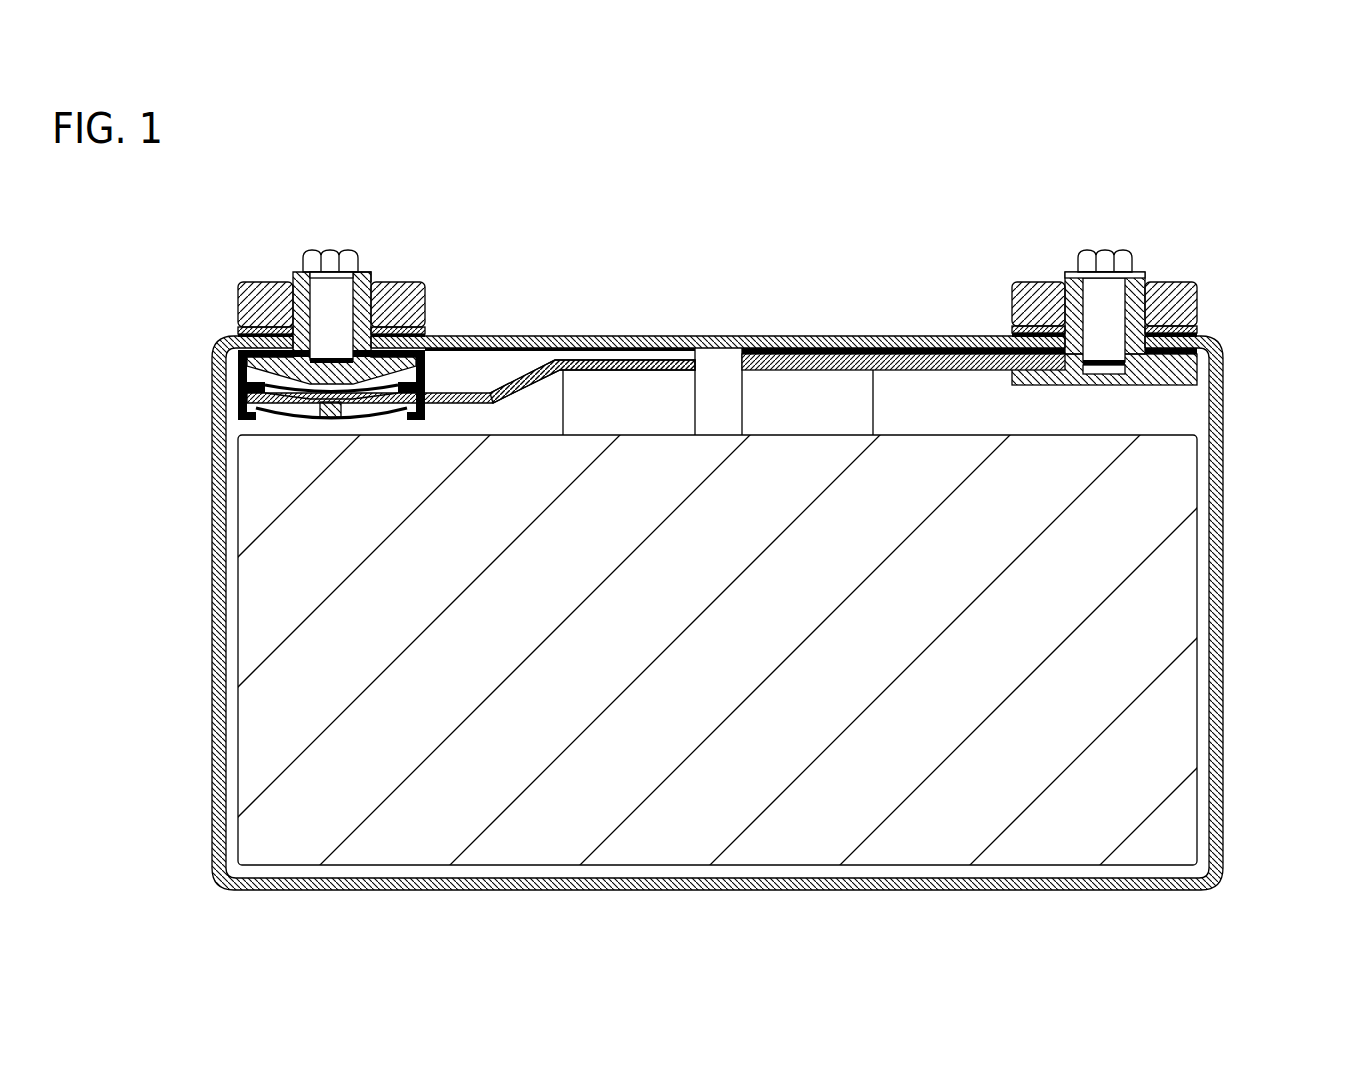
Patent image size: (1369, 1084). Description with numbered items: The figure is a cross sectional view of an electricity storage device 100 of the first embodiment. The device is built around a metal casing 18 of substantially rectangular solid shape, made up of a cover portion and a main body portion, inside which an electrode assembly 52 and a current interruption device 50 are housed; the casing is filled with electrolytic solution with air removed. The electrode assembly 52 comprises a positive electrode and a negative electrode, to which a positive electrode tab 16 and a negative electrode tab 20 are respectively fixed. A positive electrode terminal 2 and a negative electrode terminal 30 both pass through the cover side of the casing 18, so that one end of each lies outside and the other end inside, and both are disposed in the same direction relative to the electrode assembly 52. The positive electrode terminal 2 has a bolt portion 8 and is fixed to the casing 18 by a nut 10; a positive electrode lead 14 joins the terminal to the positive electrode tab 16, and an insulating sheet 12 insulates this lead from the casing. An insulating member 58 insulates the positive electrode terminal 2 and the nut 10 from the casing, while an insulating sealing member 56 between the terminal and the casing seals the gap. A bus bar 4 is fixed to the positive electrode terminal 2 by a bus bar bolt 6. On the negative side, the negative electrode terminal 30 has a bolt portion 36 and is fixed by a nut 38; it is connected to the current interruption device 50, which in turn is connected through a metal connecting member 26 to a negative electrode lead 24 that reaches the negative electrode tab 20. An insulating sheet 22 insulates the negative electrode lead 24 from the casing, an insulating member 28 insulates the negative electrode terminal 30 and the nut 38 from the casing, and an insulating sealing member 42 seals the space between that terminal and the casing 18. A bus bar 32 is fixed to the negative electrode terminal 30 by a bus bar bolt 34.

The electricity storage device 100 is at (1247, 217).
The positive electrode terminal 2 is at (1150, 282).
The bus bar 4 is at (1145, 280).
The bus bar bolt 6 is at (1105, 260).
The bolt portion 8 is at (1068, 280).
The nut 10 is at (1028, 283).
The insulating sheet 12 is at (900, 350).
The positive electrode lead 14 is at (855, 363).
The positive electrode tab 16 is at (787, 385).
The casing 18 is at (728, 335).
The negative electrode tab 20 is at (640, 390).
The insulating sheet 22 is at (600, 352).
The negative electrode lead 24 is at (533, 368).
The connecting member 26 is at (438, 392).
The insulating member 28 is at (403, 292).
The negative electrode terminal 30 is at (378, 277).
The bus bar 32 is at (373, 277).
The bus bar bolt 34 is at (330, 262).
The bolt portion 36 is at (297, 277).
The nut 38 is at (252, 281).
The sealing member 42 is at (240, 372).
The current interruption device 50 is at (273, 420).
The electrode assembly 52 is at (1160, 708).
The sealing member 56 is at (1218, 352).
The insulating member 58 is at (1195, 332).